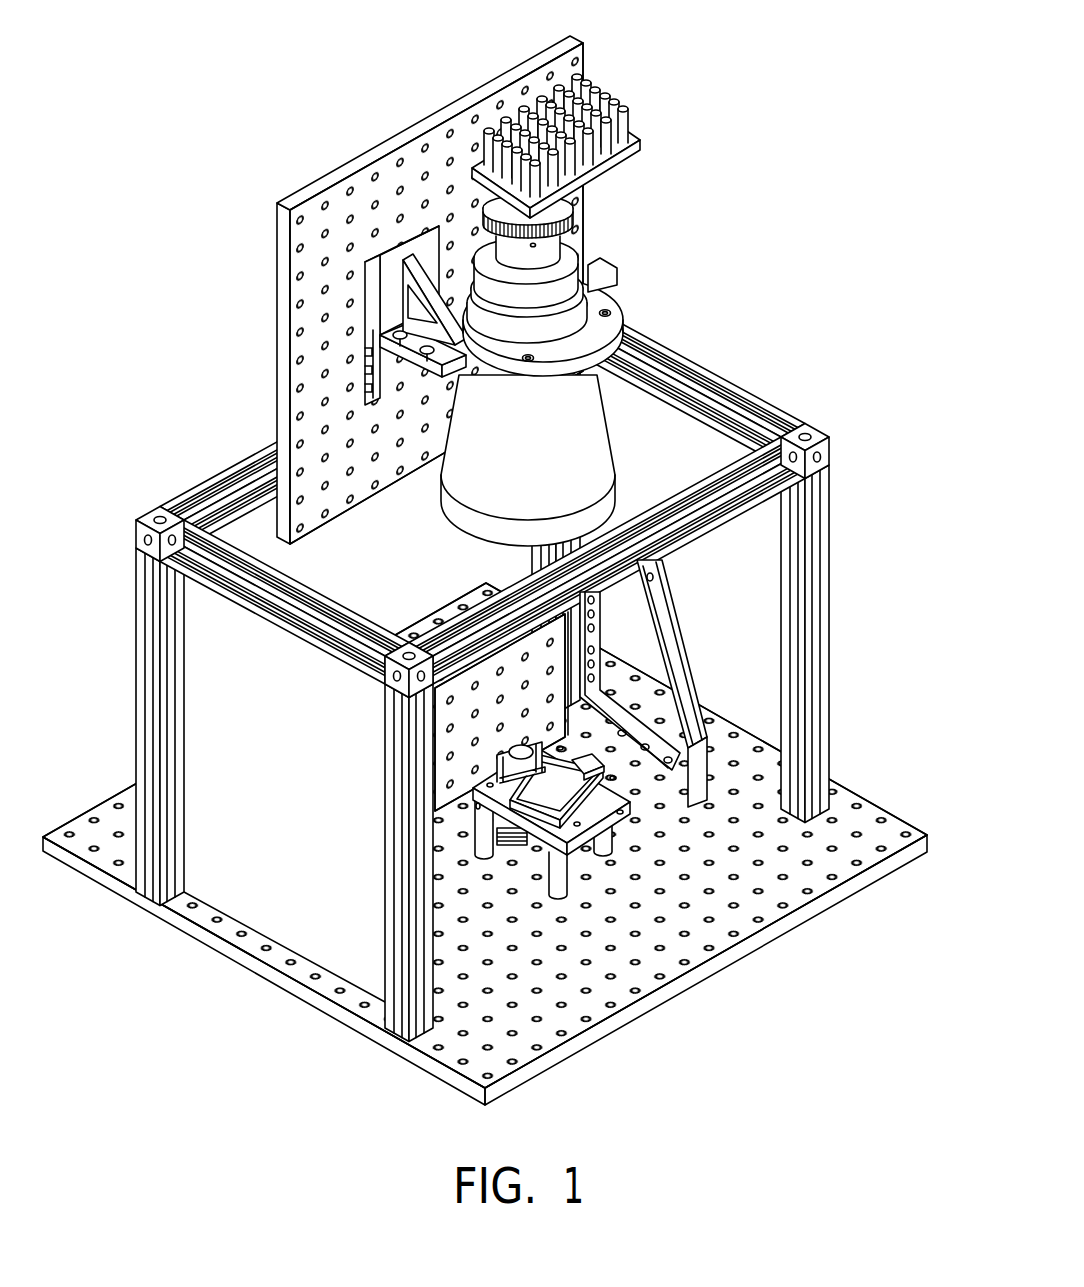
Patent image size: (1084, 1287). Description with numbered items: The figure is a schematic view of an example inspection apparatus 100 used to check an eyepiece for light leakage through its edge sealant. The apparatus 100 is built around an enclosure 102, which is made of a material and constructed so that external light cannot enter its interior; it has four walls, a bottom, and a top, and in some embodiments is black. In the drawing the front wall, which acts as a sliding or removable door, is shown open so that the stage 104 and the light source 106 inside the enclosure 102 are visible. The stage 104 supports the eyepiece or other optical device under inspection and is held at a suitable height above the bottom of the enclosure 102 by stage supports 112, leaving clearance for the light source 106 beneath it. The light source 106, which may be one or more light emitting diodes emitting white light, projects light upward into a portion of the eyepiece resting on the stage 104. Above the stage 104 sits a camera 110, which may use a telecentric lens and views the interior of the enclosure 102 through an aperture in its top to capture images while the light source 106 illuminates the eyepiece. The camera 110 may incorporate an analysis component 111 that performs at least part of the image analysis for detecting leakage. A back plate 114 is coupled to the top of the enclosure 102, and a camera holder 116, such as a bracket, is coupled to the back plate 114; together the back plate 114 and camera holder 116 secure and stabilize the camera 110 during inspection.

The inspection apparatus 100 is at (502, 570).
The enclosure 102 is at (773, 400).
The stage 104 is at (613, 858).
The light source 106 is at (493, 826).
The camera 110 is at (603, 450).
The analysis component 111 is at (590, 105).
The stage supports 112 is at (575, 822).
The back plate 114 is at (283, 407).
The camera holder 116 is at (373, 333).